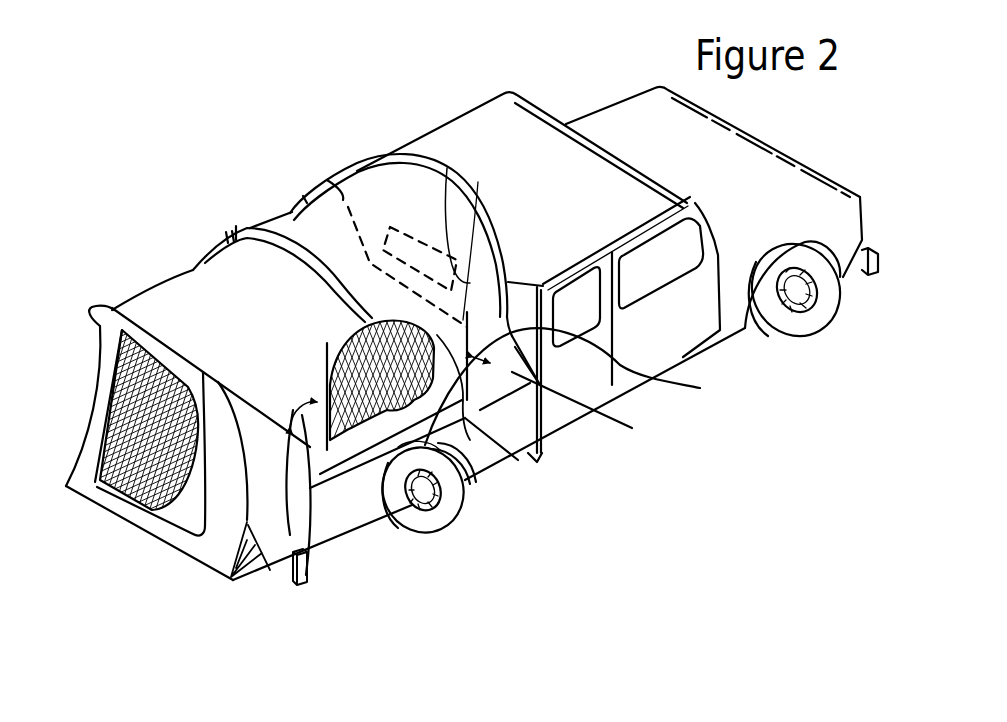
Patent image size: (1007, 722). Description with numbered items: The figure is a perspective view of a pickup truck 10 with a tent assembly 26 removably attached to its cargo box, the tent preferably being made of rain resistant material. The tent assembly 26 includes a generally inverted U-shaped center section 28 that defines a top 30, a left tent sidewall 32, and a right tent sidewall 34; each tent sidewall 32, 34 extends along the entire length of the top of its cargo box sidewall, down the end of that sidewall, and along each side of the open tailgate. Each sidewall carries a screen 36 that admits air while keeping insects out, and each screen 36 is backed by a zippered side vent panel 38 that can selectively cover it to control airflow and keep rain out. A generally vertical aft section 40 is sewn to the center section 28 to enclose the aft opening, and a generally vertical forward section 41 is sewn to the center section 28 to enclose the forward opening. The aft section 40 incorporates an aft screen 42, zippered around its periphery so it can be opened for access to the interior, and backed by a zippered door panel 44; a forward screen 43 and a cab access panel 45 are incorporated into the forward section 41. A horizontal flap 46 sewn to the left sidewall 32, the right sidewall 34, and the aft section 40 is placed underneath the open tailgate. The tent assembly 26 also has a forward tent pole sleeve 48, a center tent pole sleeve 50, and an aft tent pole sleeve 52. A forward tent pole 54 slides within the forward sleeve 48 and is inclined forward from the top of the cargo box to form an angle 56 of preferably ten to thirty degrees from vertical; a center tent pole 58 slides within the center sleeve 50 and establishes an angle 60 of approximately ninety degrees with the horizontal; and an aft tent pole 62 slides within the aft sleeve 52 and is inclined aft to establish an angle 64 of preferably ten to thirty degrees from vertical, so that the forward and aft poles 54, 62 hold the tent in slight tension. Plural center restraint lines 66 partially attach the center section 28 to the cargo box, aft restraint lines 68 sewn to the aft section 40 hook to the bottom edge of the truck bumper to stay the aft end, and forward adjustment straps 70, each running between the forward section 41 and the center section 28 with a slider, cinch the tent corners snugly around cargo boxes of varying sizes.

The pickup truck 10 is at (603, 88).
The tent assembly 26 is at (140, 228).
The center section 28 is at (373, 190).
The top 30 is at (277, 333).
The left tent sidewall 32 is at (150, 292).
The right tent sidewall 34 is at (440, 513).
The screen 36 is at (372, 525).
The zippered side vent panel 38 is at (458, 405).
The aft section 40 is at (210, 550).
The forward section 41 is at (327, 180).
The aft screen 42 is at (104, 492).
The forward screen 43 is at (394, 226).
The zippered door panel 44 is at (177, 524).
The cab access panel 45 is at (480, 168).
The horizontal flap 46 is at (80, 488).
The forward tent pole sleeve 48 is at (448, 166).
The center tent pole sleeve 50 is at (234, 228).
The aft tent pole sleeve 52 is at (90, 313).
The forward tent pole 54 is at (540, 422).
The angle 56 is at (680, 360).
The center tent pole 58 is at (425, 520).
The angle 60 is at (345, 522).
The aft tent pole 62 is at (318, 552).
The angle 64 is at (298, 588).
The center restraint lines 66 is at (513, 460).
The aft restraint lines 68 is at (272, 572).
The forward adjustment straps 70 is at (585, 408).